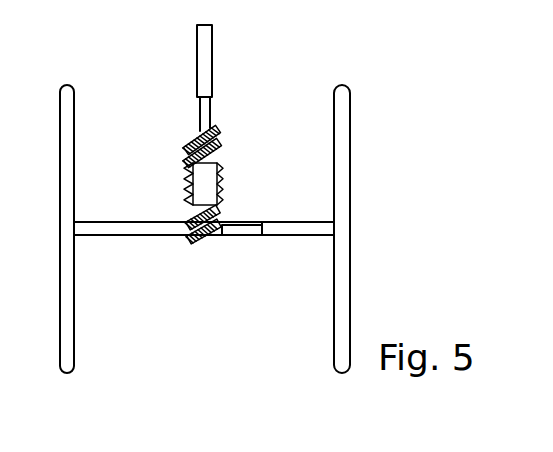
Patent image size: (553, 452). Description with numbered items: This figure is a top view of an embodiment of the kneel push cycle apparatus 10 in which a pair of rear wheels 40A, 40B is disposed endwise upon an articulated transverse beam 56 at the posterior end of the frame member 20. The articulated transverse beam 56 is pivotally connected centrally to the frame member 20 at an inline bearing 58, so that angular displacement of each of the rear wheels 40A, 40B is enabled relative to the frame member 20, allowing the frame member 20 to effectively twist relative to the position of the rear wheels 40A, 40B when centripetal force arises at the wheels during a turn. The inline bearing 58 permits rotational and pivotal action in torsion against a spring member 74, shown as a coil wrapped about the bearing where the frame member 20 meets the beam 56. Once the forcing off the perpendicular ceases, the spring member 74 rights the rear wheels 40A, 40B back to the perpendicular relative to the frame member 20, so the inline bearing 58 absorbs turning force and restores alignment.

The kneel push cycle apparatus 10 is at (397, 82).
The frame member 20 is at (202, 58).
The rear wheel 40A is at (66, 117).
The rear wheel 40B is at (343, 177).
The articulated transverse beam 56 is at (148, 235).
The inline bearing 58 is at (205, 183).
The spring member 74 is at (223, 134).